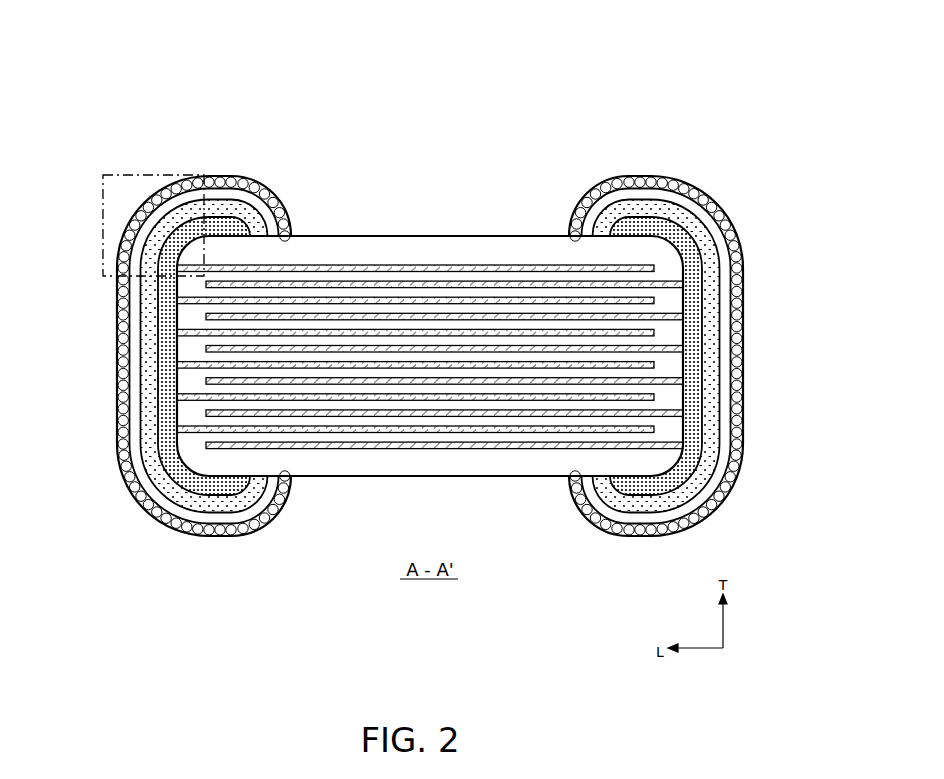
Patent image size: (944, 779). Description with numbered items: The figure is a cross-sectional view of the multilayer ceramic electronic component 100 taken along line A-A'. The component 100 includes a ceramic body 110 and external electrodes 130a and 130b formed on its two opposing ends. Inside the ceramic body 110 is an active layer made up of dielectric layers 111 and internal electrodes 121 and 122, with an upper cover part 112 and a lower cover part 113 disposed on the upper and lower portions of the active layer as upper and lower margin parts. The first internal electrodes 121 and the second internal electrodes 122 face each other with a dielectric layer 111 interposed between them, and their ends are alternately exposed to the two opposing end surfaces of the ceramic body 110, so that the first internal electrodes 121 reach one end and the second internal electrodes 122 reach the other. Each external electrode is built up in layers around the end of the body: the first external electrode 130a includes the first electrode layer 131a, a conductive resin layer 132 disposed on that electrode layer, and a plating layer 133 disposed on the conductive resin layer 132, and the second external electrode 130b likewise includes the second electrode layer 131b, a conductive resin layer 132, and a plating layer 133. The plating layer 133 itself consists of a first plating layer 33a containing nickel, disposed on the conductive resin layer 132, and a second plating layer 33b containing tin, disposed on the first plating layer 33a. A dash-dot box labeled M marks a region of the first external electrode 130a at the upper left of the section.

The multilayer ceramic electronic component 100 is at (382, 35).
The ceramic body 110 is at (425, 236).
The dielectric layers 111 is at (342, 275).
The upper cover part 112 is at (382, 250).
The lower cover part 113 is at (506, 462).
The first internal electrode 121 is at (467, 265).
The second internal electrode 122 is at (508, 283).
The first external electrode 130a is at (287, 101).
The second external electrode 130b is at (573, 101).
The first electrode layer 131a is at (134, 223).
The second electrode layer 131b is at (727, 222).
The conductive resin layer 132 is at (163, 222).
The plating layer 133 is at (212, 134).
The first plating layer 33a is at (229, 193).
The second plating layer 33b is at (268, 193).
The enlarged region M is at (103, 229).